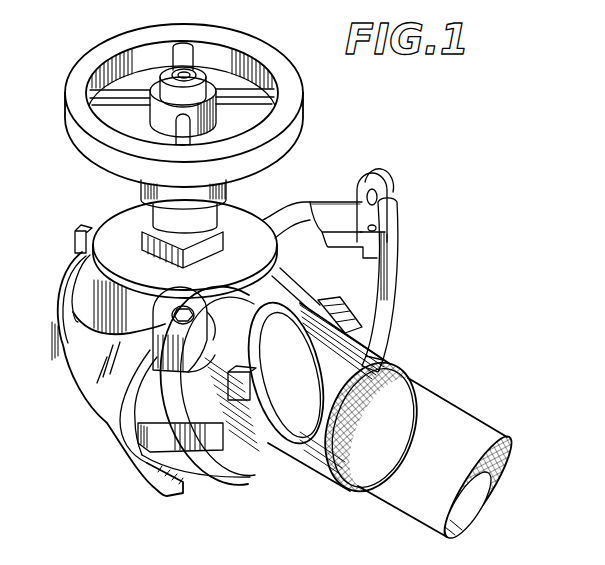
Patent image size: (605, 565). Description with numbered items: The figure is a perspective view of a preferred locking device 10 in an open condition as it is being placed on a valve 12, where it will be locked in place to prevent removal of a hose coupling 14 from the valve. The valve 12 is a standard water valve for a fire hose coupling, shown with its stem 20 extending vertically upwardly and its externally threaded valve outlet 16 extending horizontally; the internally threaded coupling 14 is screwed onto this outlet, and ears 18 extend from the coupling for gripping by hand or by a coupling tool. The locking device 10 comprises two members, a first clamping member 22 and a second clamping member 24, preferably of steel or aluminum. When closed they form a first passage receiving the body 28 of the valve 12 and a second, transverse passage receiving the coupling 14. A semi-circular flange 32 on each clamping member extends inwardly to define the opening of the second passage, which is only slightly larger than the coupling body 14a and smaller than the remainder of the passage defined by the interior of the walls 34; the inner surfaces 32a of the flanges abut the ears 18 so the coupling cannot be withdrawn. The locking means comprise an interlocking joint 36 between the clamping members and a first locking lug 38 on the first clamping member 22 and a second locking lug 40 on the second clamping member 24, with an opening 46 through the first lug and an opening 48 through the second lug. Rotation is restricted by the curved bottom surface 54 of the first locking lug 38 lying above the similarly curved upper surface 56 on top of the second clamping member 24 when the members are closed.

The locking device 10 is at (403, 228).
The valve 12 is at (130, 222).
The hose coupling 14 is at (300, 454).
The coupling body 14a is at (330, 383).
The valve outlet 16 is at (243, 346).
The ears 18 is at (250, 442).
The stem 20 is at (230, 199).
The first clamping member 22 is at (112, 392).
The second clamping member 24 is at (332, 199).
The body 28 is at (184, 406).
The semi-circular flange 32 is at (154, 477).
The inner surfaces 32a is at (383, 352).
The walls 34 is at (85, 362).
The interlocking joint 36 is at (75, 242).
The first locking lug 38 is at (180, 294).
The second locking lug 40 is at (372, 174).
The opening 46 is at (188, 313).
The opening 48 is at (377, 194).
The bottom surface 54 is at (117, 362).
The upper surface 56 is at (376, 229).